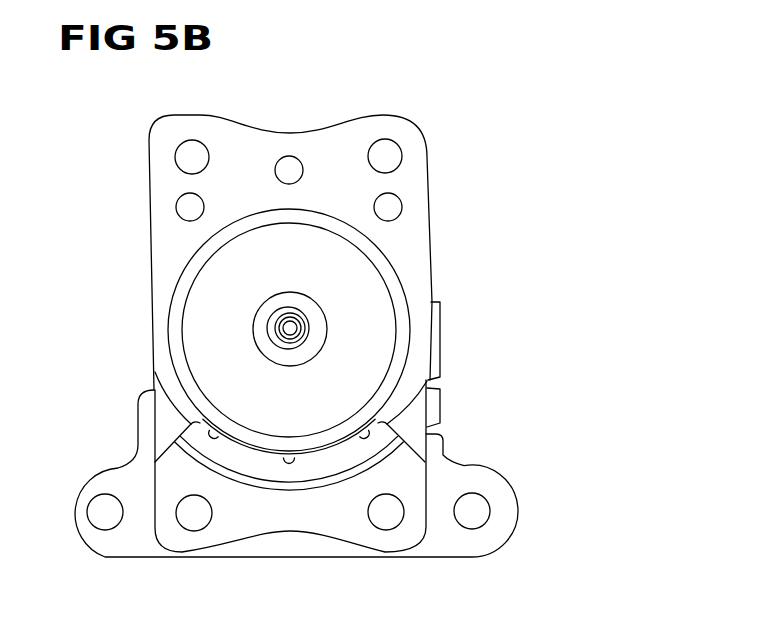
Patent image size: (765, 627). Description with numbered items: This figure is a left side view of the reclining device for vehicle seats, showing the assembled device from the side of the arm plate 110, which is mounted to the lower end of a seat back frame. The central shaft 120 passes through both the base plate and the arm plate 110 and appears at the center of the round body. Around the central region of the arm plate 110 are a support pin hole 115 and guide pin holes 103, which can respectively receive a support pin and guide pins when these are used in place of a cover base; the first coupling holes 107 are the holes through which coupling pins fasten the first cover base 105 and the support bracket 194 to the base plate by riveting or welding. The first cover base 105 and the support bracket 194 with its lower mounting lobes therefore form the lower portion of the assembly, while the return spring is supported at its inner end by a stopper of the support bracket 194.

The guide pin holes 103 is at (183, 208).
The first cover base 105 is at (293, 513).
The first coupling holes 107 is at (393, 155).
The arm plate 110 is at (157, 247).
The support pin hole 115 is at (290, 163).
The central shaft 120 is at (291, 330).
The support bracket 194 is at (146, 546).